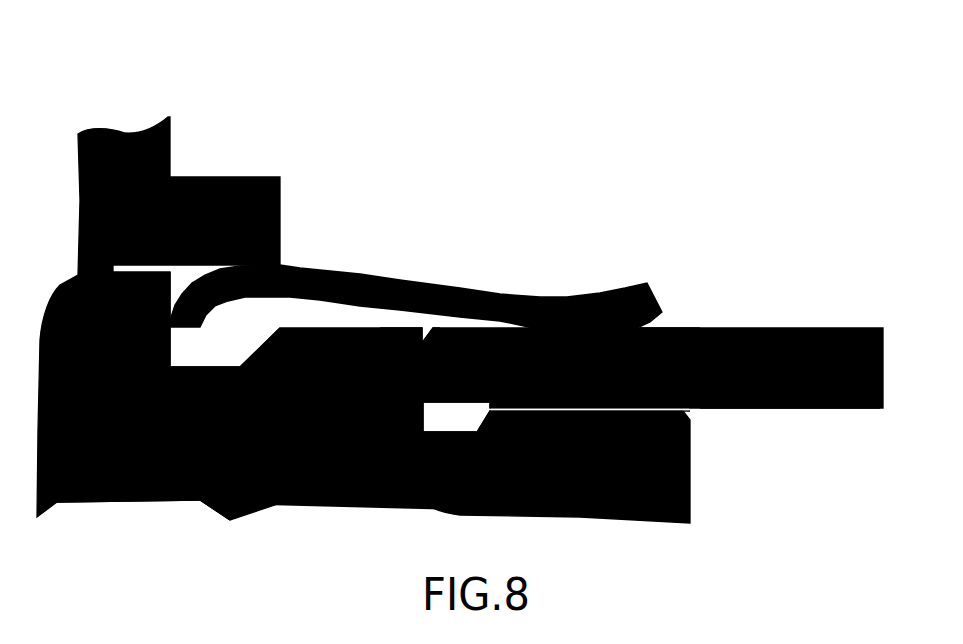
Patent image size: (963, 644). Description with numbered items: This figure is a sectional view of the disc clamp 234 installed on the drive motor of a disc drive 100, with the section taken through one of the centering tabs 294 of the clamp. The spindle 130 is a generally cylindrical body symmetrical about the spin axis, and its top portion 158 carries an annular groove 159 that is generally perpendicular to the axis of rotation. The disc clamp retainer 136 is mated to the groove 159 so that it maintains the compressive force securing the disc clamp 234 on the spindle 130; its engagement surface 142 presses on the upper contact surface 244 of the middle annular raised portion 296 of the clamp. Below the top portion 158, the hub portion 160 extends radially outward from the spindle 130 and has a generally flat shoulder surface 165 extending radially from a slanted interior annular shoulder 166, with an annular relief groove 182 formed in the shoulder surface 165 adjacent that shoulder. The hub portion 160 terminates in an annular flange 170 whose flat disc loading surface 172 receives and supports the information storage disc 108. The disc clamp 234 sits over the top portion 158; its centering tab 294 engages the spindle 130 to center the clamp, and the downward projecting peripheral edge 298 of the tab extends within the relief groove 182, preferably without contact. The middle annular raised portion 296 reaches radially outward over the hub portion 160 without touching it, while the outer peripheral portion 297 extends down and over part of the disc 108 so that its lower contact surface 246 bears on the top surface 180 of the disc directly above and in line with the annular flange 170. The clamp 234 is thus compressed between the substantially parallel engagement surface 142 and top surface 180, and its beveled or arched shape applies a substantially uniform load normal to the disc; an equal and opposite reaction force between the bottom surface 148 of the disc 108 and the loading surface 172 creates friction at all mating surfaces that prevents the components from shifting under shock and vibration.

The disc drive 100 is at (108, 106).
The information storage disc 108 is at (842, 333).
The spindle 130 is at (70, 278).
The disc clamp retainer 136 is at (244, 184).
The engagement surface 142 is at (200, 272).
The bottom surface 148 is at (797, 410).
The top portion 158 is at (90, 152).
The annular groove 159 is at (105, 258).
The hub portion 160 is at (194, 512).
The shoulder surface 165 is at (380, 328).
The interior annular shoulder 166 is at (255, 353).
The annular flange 170 is at (638, 525).
The disc loading surface 172 is at (630, 408).
The top surface 180 is at (778, 328).
The annular relief groove 182 is at (205, 362).
The disc clamp 234 is at (550, 288).
The upper contact surface 244 is at (300, 258).
The lower contact surface 246 is at (650, 327).
The centering tab 294 is at (207, 322).
The middle annular raised portion 296 is at (388, 278).
The outer peripheral portion 297 is at (620, 290).
The peripheral edge 298 is at (167, 328).